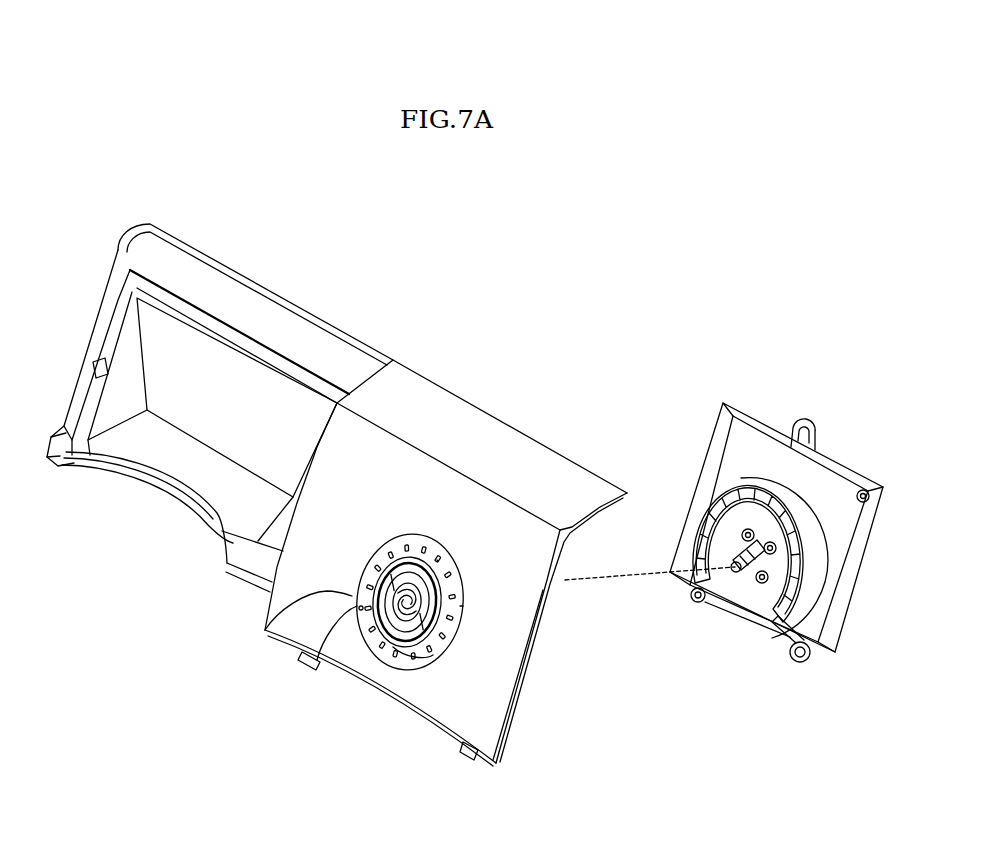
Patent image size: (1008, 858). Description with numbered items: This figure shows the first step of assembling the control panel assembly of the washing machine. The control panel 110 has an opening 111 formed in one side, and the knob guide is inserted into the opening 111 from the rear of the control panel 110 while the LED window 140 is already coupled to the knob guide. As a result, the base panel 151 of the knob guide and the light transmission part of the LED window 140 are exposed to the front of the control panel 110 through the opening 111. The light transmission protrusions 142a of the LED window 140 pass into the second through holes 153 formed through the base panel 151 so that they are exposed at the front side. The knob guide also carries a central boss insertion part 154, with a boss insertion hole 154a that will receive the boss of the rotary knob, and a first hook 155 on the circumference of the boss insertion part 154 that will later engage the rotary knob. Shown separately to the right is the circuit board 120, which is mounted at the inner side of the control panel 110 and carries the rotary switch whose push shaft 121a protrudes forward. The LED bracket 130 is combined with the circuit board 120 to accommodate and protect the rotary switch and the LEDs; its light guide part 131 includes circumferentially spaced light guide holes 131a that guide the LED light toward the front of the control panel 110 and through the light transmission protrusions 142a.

The control panel 110 is at (520, 758).
The opening 111 is at (407, 533).
The circuit board 120 is at (830, 664).
The push shaft 121a is at (737, 562).
The LED bracket 130 is at (737, 480).
The light guide part 131 is at (675, 496).
The light guide holes 131a is at (682, 570).
The LED window 140 is at (318, 660).
The light transmission protrusions 142a is at (295, 665).
The base panel 151 is at (392, 652).
The second through holes 153 is at (265, 630).
The boss insertion part 154 is at (453, 563).
The boss insertion hole 154a is at (463, 606).
The first hook 155 is at (428, 668).